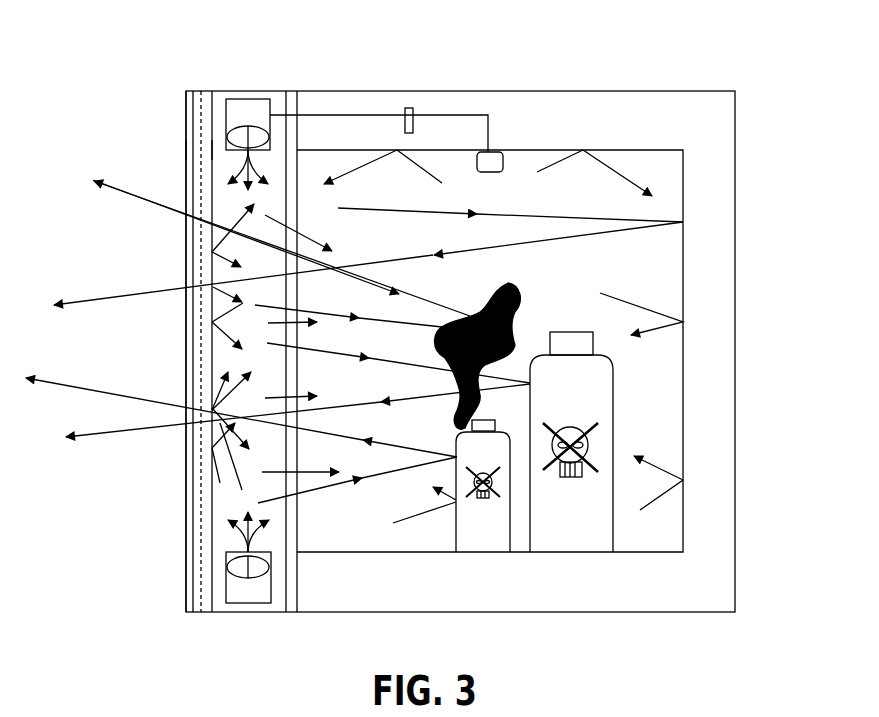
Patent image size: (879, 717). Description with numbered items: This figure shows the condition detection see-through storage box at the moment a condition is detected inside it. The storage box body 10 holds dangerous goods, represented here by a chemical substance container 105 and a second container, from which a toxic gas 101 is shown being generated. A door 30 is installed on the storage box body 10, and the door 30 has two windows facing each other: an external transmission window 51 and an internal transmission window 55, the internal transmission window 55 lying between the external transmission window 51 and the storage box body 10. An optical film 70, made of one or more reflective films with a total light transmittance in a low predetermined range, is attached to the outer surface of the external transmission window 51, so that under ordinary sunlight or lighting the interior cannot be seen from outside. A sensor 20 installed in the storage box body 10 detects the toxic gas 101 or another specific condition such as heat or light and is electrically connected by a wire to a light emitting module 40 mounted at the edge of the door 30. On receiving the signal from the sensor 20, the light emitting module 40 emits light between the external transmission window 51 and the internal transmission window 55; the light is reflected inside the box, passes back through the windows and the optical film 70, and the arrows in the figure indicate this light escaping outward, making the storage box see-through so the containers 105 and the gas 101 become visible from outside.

The storage box body 10 is at (690, 92).
The sensor 20 is at (495, 158).
The door 30 is at (144, 149).
The light emitting module 40 is at (248, 118).
The external transmission window 51 is at (205, 498).
The internal transmission window 55 is at (290, 520).
The optical film 70 is at (186, 250).
The contaminant (smoke) 101 is at (530, 277).
The chemical substance container 105 is at (483, 537).